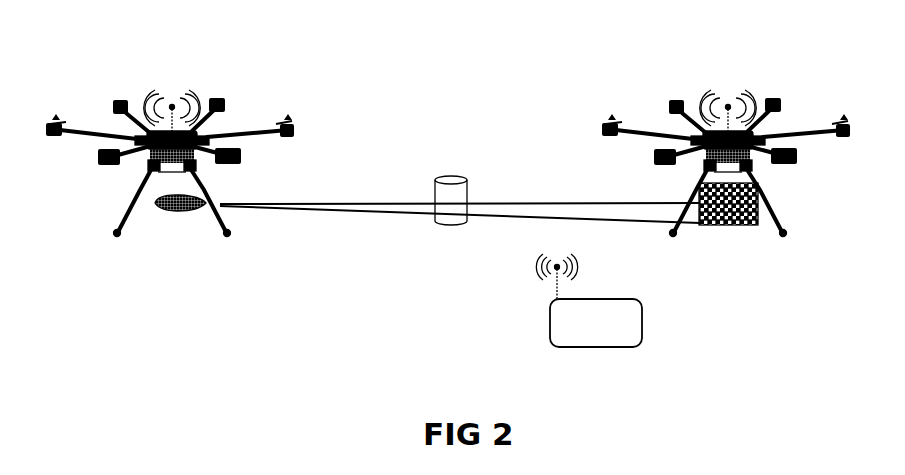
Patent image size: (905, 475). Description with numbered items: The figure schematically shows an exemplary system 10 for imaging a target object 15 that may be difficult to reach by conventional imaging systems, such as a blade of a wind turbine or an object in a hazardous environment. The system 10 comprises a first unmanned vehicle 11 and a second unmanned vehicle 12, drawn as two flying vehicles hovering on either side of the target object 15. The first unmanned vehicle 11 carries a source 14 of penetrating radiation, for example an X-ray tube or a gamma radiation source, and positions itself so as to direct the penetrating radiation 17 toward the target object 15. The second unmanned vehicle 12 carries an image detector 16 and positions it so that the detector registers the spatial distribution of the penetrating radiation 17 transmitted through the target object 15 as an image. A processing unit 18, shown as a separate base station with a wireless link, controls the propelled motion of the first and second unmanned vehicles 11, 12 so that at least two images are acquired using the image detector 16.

The system 10 is at (318, 335).
The first unmanned vehicle 11 is at (170, 158).
The second unmanned vehicle 12 is at (693, 181).
The source of penetrating radiation 14 is at (182, 218).
The target object 15 is at (420, 160).
The image detector 16 is at (742, 223).
The penetrating radiation 17 is at (528, 203).
The processing unit 18 is at (642, 327).